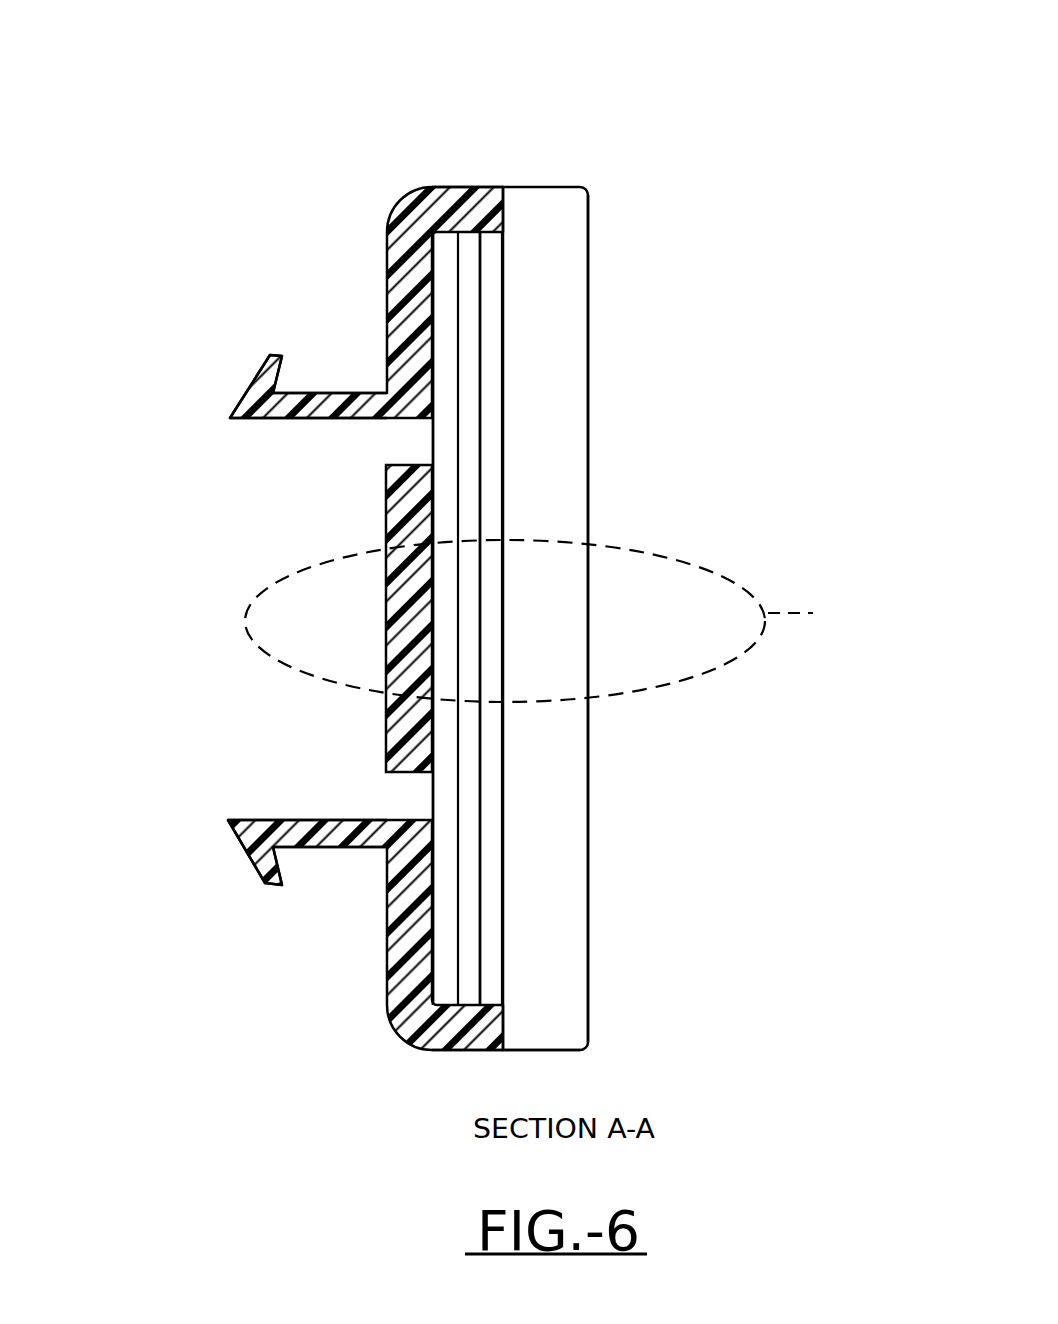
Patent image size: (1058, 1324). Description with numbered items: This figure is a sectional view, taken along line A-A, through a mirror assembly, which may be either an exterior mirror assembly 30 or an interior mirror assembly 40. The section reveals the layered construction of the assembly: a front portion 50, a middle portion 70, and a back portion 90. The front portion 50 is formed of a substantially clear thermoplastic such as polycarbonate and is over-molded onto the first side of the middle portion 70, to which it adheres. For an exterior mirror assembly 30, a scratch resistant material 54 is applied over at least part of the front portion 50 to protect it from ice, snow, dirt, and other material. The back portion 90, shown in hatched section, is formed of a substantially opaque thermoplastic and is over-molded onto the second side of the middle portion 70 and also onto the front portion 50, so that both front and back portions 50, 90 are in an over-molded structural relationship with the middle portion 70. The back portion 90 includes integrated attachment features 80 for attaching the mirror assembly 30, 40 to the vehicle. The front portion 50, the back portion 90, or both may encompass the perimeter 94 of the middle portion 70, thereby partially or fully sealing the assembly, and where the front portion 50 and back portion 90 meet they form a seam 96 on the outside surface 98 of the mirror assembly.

The exterior mirror assembly 30 is at (494, 568).
The interior mirror assembly 40 is at (494, 568).
The front portion 50 is at (557, 360).
The scratch resistant material 54 is at (590, 432).
The middle portion 70 is at (460, 793).
The integrated attachment features 80 is at (225, 433).
The back portion 90 is at (395, 222).
The perimeter 94 is at (463, 1008).
The seam 96 is at (500, 187).
The outside surface 98 is at (525, 1052).